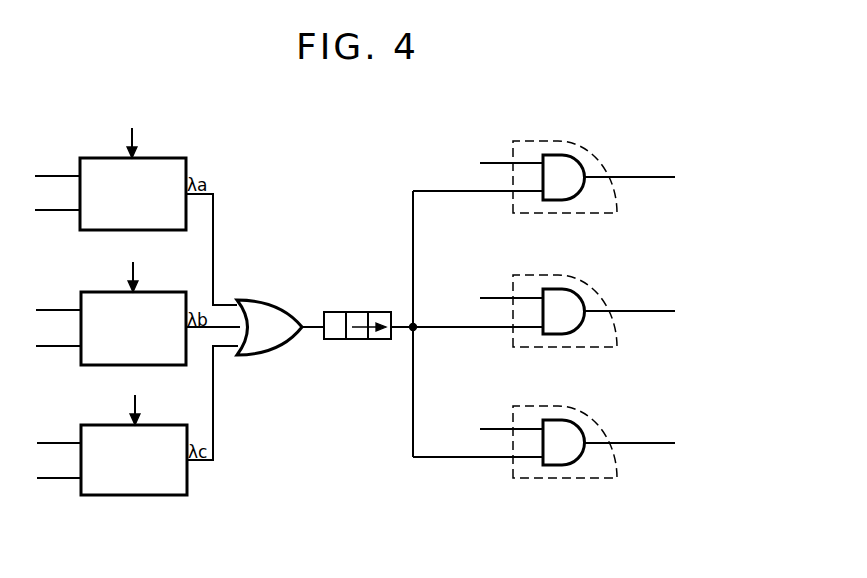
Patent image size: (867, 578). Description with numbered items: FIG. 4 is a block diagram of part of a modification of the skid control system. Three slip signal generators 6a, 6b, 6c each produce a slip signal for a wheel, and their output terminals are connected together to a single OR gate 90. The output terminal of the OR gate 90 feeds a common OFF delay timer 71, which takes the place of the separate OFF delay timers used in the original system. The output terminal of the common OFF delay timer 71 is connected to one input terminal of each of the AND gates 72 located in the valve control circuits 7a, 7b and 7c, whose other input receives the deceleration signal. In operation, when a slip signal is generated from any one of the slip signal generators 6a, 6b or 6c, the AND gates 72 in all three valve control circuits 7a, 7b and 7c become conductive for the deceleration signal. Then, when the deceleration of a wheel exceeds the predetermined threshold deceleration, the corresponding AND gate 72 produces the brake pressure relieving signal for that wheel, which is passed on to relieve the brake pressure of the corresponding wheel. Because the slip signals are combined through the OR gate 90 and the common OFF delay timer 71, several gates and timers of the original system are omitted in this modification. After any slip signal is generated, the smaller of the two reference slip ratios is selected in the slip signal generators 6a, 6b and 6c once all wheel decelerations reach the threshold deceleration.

The slip signal generator 6a is at (92, 162).
The slip signal generator 6b is at (92, 296).
The slip signal generator 6c is at (92, 429).
The OR gate 90 is at (263, 305).
The common OFF delay timer 71 is at (356, 312).
The valve control circuit 7a is at (577, 169).
The valve control circuit 7b is at (577, 303).
The valve control circuit 7c is at (580, 434).
The AND gate 72 is at (584, 292).